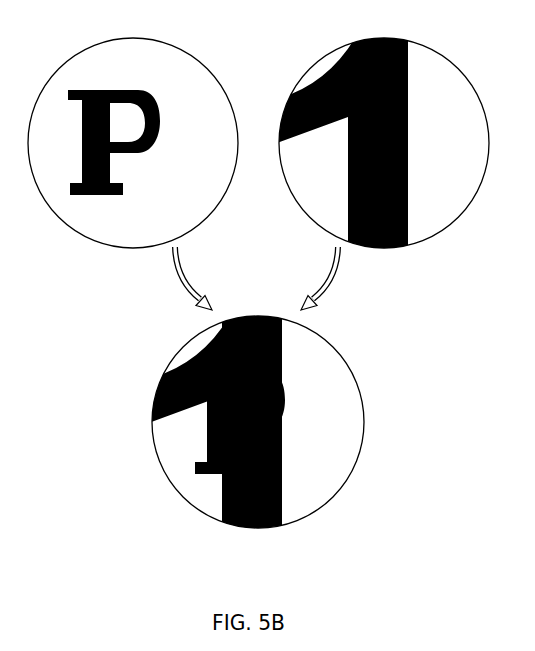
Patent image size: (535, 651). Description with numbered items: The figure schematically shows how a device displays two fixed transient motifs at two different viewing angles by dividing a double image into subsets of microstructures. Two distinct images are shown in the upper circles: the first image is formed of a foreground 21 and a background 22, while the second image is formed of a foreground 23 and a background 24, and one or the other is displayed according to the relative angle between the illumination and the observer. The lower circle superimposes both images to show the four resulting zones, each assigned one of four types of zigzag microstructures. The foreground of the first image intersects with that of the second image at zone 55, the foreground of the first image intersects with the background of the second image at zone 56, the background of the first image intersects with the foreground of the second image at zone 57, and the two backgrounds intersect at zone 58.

The foreground of the first image 21 is at (120, 88).
The background of the first image 22 is at (63, 255).
The foreground of the second image 23 is at (387, 33).
The background of the second image 24 is at (433, 170).
The zone where the foreground of the first image intersects with the foreground of t 55 is at (207, 362).
The zone where the foreground of the first image intersects with the background of t 56 is at (217, 473).
The zone where the background of the first image intersects with the foreground of t 57 is at (270, 362).
The zone where the two backgrounds intersect 58 is at (332, 433).